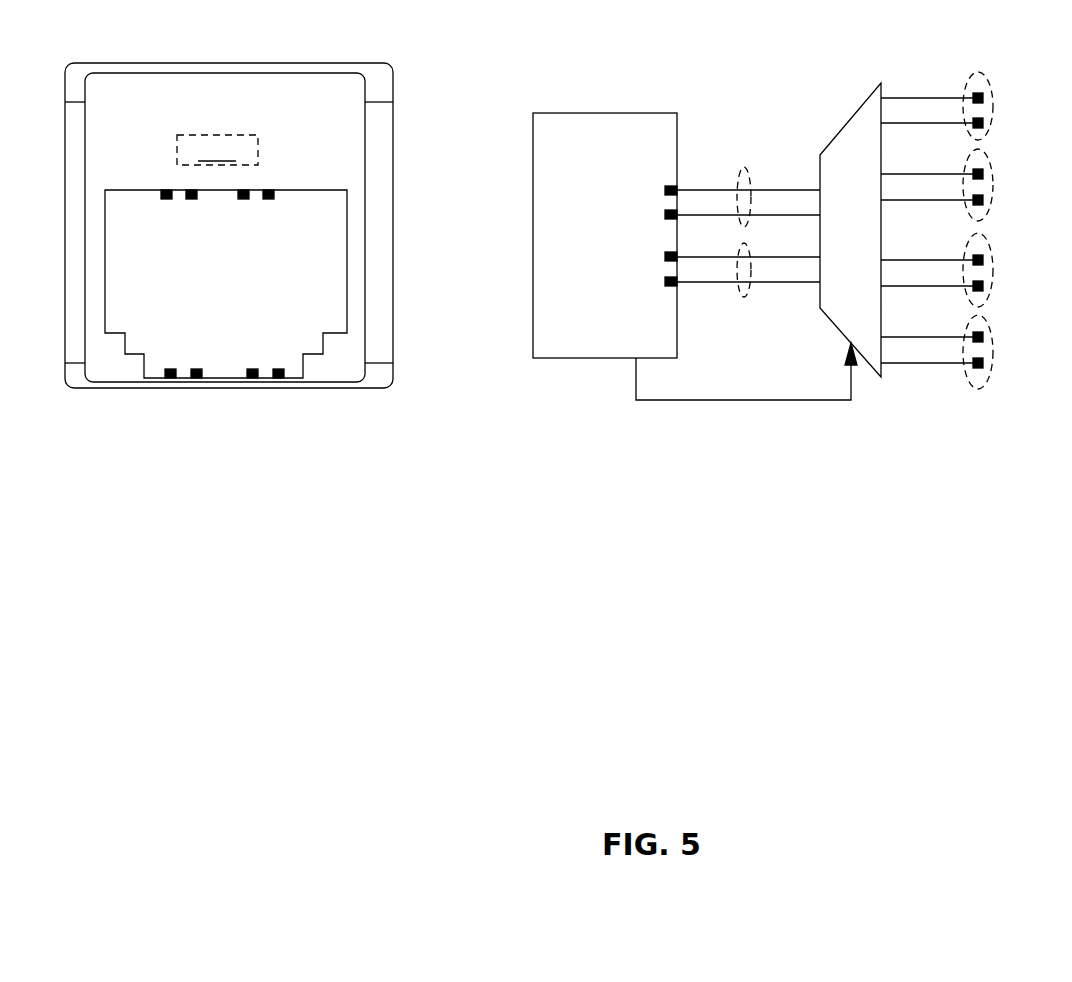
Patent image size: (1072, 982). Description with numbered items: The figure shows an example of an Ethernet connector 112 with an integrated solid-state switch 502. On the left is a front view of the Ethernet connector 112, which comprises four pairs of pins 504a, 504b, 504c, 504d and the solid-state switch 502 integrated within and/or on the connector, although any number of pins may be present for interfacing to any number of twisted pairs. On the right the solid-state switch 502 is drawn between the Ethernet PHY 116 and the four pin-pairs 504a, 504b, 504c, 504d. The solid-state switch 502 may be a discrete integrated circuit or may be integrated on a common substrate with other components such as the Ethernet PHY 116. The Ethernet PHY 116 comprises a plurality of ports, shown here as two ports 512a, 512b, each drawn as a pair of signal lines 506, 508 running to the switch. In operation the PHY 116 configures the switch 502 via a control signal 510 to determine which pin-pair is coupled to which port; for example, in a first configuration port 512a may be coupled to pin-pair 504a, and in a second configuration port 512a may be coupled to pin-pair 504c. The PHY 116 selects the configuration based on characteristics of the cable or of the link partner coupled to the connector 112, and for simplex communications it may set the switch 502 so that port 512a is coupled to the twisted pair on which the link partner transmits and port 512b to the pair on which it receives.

The Ethernet connector 112 is at (104, 63).
The solid-state switch 502 is at (868, 239).
The pin-pair 504a is at (990, 86).
The pin-pair 504b is at (990, 161).
The pin-pair 504c is at (990, 249).
The pin-pair 504d is at (990, 331).
The Ethernet PHY 116 is at (623, 349).
The port 512a is at (665, 205).
The port 512b is at (665, 267).
The first differential signal pair 506 is at (744, 173).
The second differential signal pair 508 is at (742, 297).
The control signal 510 is at (797, 400).